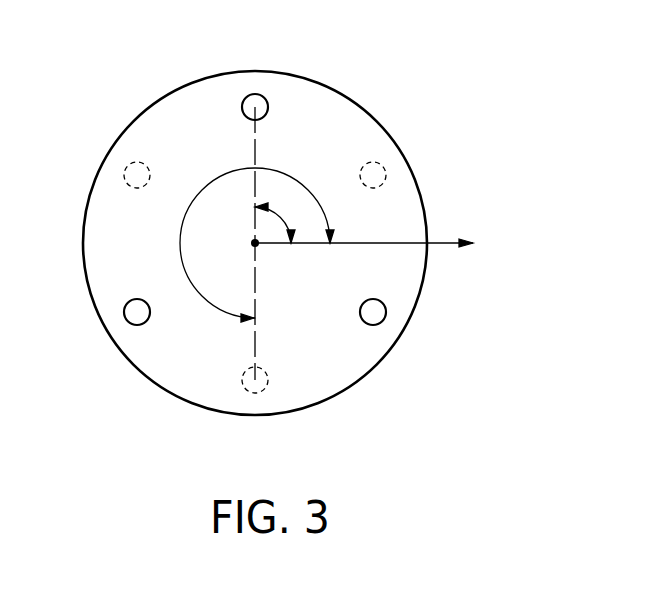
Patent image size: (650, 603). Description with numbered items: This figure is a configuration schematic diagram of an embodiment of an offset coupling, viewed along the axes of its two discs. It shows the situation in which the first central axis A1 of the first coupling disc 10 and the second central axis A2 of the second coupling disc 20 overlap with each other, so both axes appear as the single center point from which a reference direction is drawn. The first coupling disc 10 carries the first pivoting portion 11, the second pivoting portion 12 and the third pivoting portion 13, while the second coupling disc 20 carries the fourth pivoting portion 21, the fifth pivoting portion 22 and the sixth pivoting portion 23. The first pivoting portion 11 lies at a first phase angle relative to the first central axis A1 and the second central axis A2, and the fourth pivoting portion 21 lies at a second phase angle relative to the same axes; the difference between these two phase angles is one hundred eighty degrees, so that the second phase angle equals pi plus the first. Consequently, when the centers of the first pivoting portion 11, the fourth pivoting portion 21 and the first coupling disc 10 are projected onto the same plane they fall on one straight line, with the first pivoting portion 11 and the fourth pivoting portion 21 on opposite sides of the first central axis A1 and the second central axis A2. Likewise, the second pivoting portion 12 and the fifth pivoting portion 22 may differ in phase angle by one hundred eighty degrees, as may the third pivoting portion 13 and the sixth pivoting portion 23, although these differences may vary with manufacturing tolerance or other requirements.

The first coupling disc 10 is at (255, 220).
The second coupling disc 20 is at (171, 93).
The first pivoting portion 11 is at (258, 98).
The second pivoting portion 12 is at (387, 321).
The third pivoting portion 13 is at (125, 320).
The fourth pivoting portion 21 is at (260, 393).
The fifth pivoting portion 22 is at (127, 165).
The sixth pivoting portion 23 is at (383, 163).
The first central axis A1 is at (389, 265).
The second central axis A2 is at (257, 245).